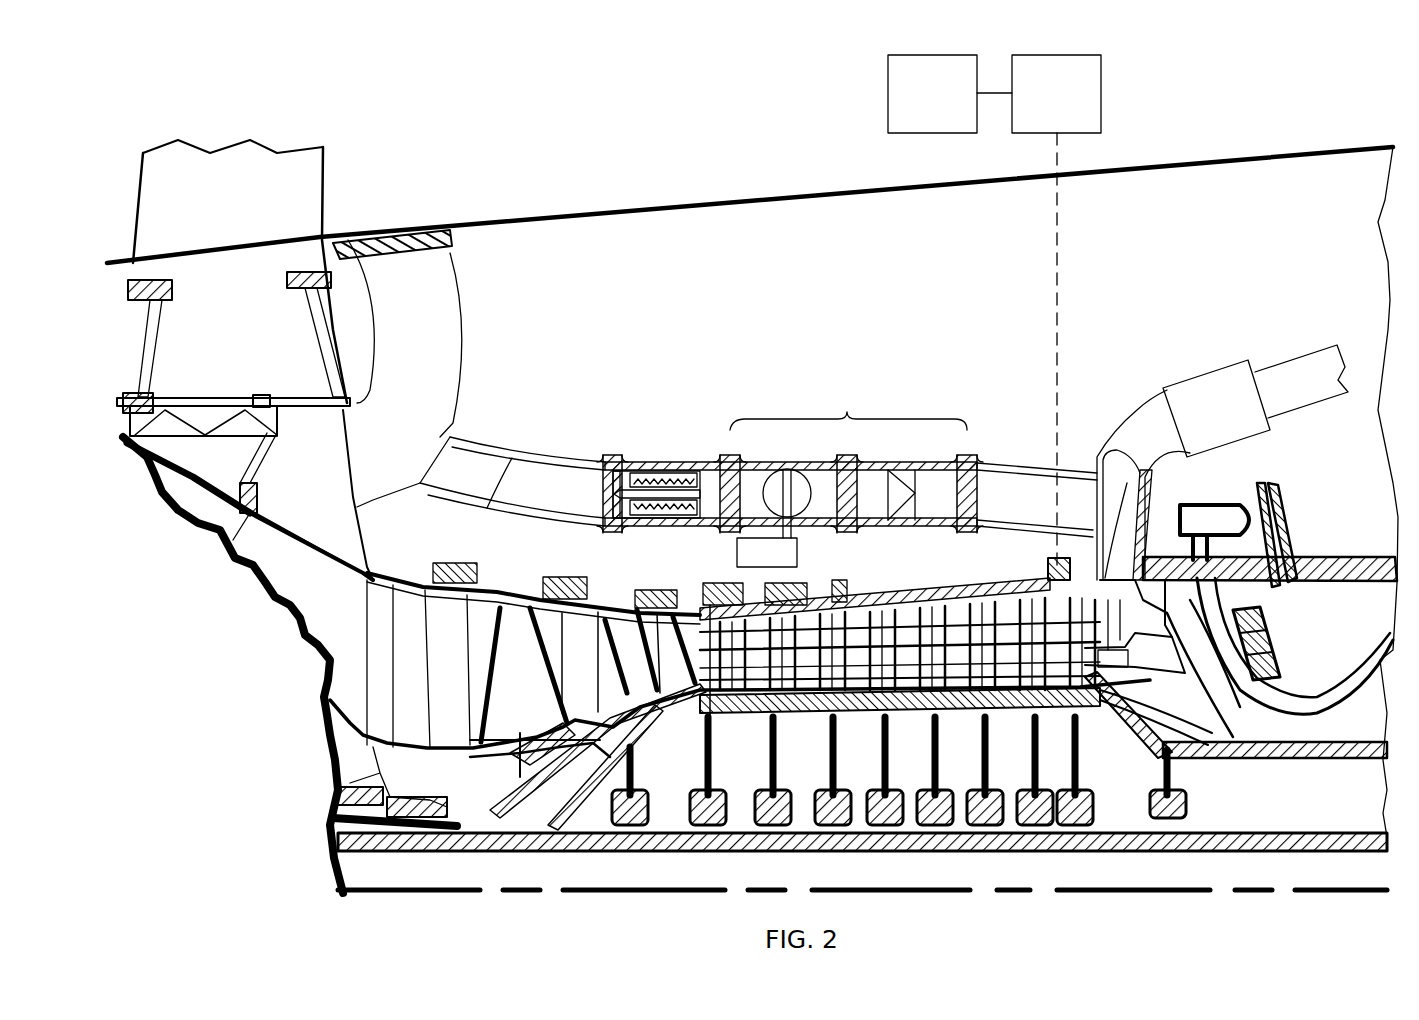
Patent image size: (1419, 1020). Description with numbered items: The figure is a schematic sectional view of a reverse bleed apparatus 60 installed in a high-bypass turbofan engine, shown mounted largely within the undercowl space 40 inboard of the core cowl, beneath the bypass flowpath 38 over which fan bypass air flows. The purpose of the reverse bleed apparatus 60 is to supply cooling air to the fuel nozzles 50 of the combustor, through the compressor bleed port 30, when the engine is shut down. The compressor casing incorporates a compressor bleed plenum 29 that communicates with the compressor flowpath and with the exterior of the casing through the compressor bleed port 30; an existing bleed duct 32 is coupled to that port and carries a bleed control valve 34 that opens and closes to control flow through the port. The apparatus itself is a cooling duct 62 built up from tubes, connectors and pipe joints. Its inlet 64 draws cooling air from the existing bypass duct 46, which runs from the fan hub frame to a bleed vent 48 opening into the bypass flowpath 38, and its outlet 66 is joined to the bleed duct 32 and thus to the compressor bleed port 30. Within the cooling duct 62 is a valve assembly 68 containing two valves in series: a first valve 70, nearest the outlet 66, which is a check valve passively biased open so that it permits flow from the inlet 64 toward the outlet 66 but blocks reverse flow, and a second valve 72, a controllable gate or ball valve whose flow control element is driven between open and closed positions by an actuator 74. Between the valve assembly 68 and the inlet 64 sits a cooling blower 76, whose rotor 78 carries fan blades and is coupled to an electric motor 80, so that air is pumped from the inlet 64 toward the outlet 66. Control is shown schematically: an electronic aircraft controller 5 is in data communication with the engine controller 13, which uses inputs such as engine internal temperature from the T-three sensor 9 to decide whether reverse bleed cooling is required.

The aircraft controller 5 is at (950, 94).
The engine controller 13 is at (1056, 310).
The bypass flowpath 38 is at (750, 181).
The undercowl space 40 is at (1304, 492).
The bleed vent 48 is at (427, 227).
The bypass duct 46 is at (443, 307).
The reverse bleed apparatus 60 is at (833, 362).
The valve assembly 68 is at (848, 406).
The inlet 64 is at (450, 437).
The cooling duct 62 is at (620, 457).
The cooling blower 76 is at (705, 460).
The second valve 72 is at (778, 477).
The first valve 70 is at (900, 470).
The outlet 66 is at (1097, 473).
The bleed control valve 34 is at (1255, 401).
The bleed duct 32 is at (1152, 463).
The rotor 78 is at (613, 507).
The electric motor 80 is at (677, 513).
The actuator 74 is at (787, 553).
The T3 sensor 9 is at (1048, 566).
The compressor bleed port 30 is at (1105, 578).
The compressor bleed plenum 29 is at (1241, 657).
The fuel nozzles 50 is at (1268, 631).